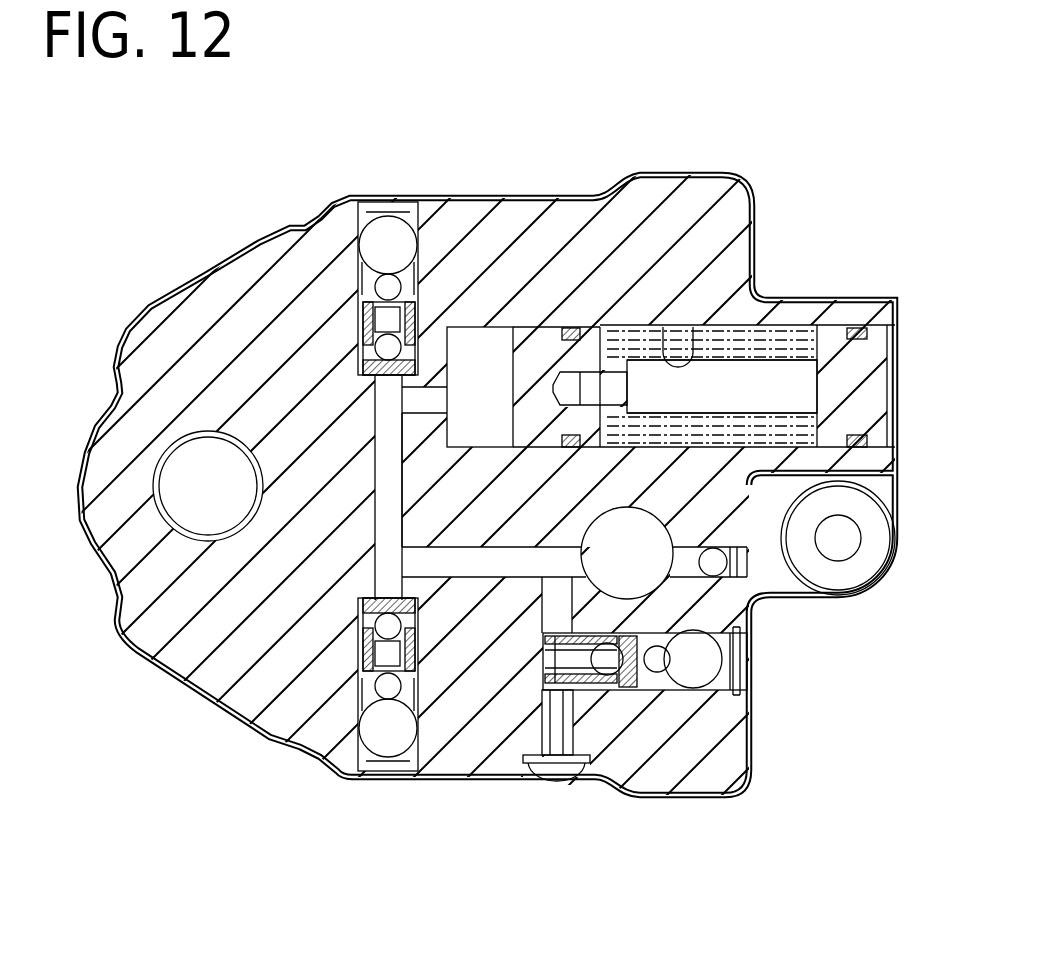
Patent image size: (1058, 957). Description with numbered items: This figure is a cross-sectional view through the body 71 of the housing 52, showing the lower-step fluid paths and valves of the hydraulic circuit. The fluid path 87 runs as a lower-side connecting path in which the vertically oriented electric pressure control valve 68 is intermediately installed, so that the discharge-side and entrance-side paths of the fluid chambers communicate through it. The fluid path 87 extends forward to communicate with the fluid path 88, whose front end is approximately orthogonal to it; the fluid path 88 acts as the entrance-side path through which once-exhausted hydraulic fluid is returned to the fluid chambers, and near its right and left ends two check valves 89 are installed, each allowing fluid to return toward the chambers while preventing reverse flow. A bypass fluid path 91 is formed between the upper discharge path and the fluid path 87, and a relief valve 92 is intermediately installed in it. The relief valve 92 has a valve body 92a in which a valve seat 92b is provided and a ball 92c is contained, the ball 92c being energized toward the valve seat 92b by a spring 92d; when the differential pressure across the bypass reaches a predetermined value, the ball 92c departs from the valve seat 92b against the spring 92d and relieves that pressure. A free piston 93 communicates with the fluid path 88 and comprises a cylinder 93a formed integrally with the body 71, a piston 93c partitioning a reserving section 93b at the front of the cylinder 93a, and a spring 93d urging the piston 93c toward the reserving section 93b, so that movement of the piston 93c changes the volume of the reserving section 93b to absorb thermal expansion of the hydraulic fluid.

The housing 52 is at (836, 202).
The body 71 is at (250, 292).
The check valve 89 is at (352, 325).
The fluid path 88 is at (390, 500).
The reserving section 93b is at (485, 335).
The piston 93c is at (535, 340).
The cylinder 93a is at (690, 330).
The free piston 93 is at (832, 318).
The spring 93d is at (785, 357).
The pressure control valve 68 is at (623, 520).
The bypass fluid path 91 is at (553, 600).
The fluid path 87 is at (457, 567).
The relief valve 92 is at (640, 693).
The spring 92d is at (543, 653).
The valve body 92a is at (603, 675).
The valve seat 92b is at (657, 672).
The ball 92c is at (622, 688).